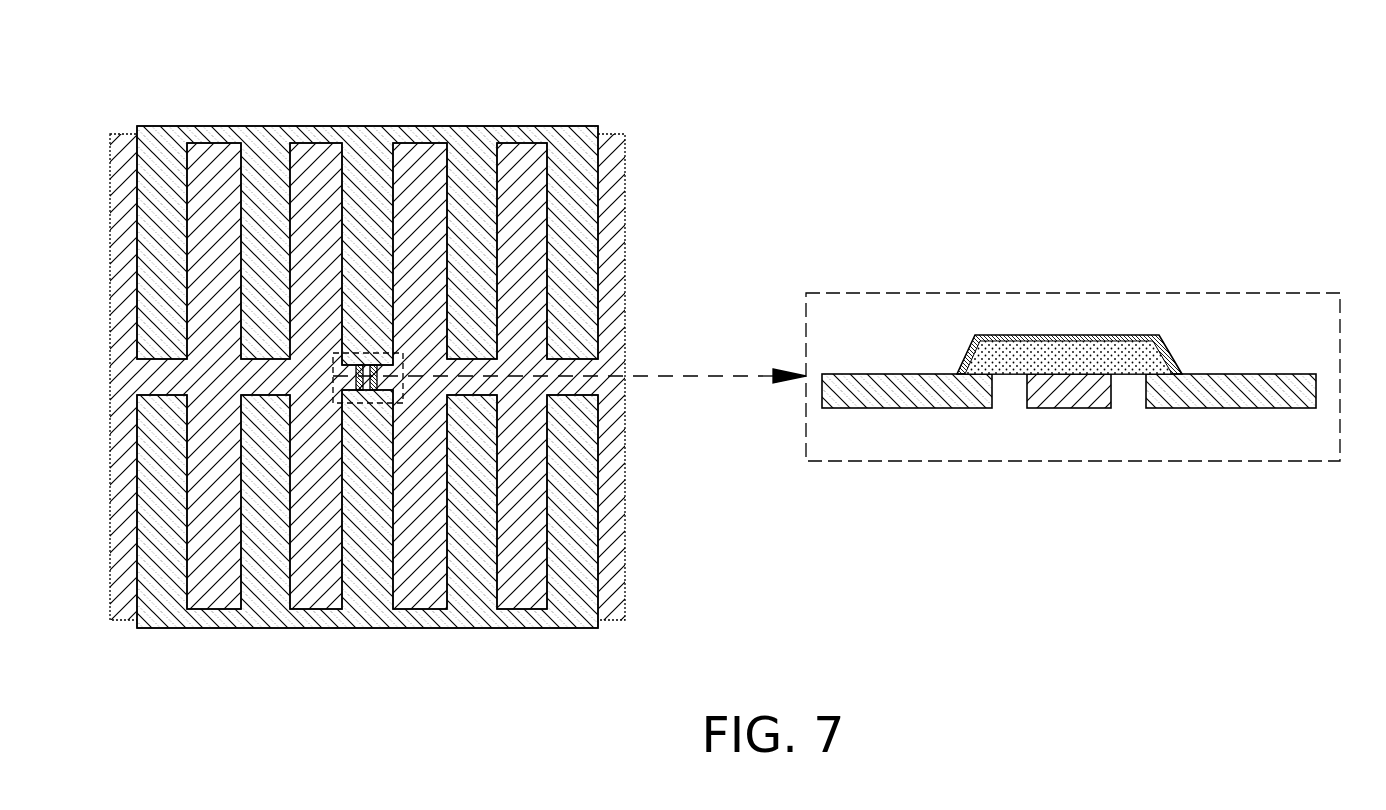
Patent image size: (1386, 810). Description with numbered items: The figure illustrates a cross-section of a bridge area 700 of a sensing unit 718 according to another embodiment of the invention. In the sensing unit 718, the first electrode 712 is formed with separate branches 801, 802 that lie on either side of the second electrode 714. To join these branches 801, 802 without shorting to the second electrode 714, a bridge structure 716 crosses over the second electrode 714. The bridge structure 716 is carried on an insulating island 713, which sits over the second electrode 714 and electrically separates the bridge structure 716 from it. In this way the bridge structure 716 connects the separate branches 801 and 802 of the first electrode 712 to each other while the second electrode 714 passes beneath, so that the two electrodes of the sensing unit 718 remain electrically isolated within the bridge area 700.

The sensing unit 718 is at (576, 80).
The bridge area 700 is at (1316, 290).
The first electrode 712 is at (1069, 447).
The branch of first electrode 801 is at (912, 395).
The branch of first electrode 802 is at (1227, 395).
The second electrode 714 is at (1073, 393).
The bridge structure 716 is at (1031, 334).
The insulating island 713 is at (1100, 350).